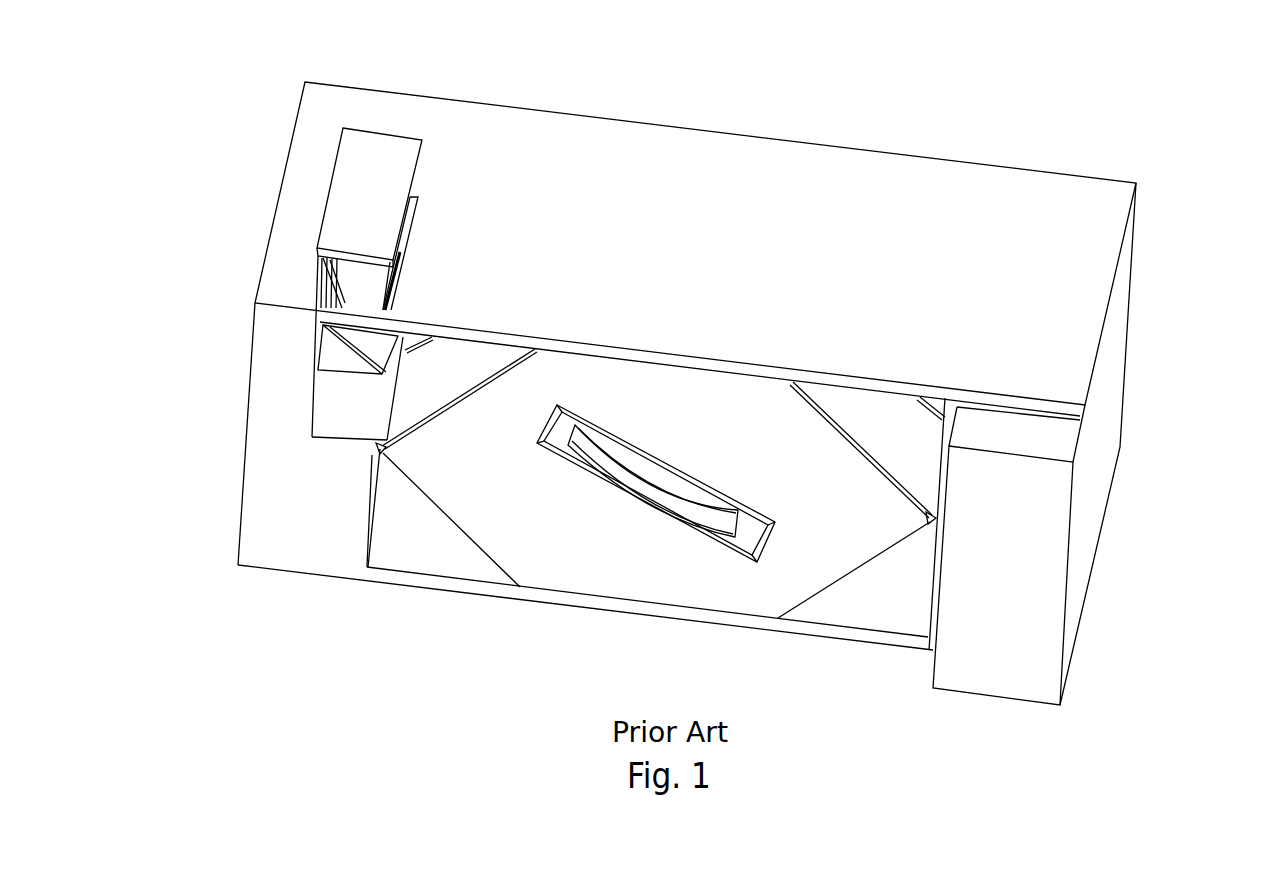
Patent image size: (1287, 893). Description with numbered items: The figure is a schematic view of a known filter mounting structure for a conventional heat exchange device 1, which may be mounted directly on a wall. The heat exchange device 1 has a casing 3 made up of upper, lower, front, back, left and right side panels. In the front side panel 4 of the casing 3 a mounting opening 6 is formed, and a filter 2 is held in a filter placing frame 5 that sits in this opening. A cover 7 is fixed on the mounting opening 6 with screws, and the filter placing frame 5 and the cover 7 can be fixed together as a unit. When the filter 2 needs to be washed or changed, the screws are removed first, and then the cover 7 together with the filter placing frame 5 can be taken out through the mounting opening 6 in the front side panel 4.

The heat exchange device 1 is at (750, 375).
The filter 2 is at (323, 288).
The casing 3 is at (1080, 287).
The front side panel 4 is at (655, 190).
The filter placing frame 5 is at (367, 285).
The mounting opening 6 is at (407, 233).
The cover 7 is at (375, 157).